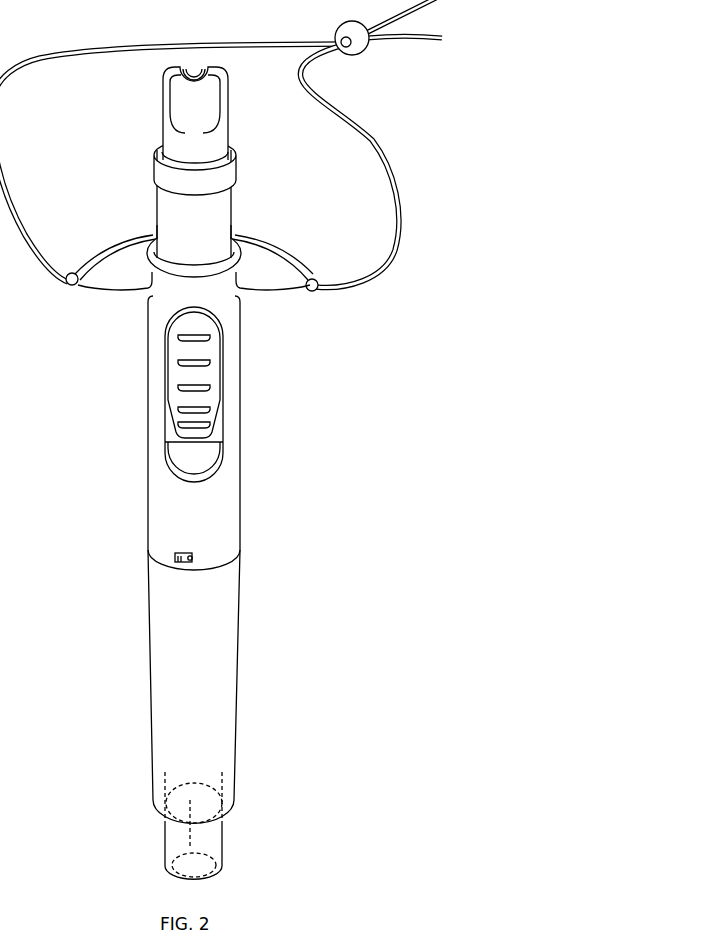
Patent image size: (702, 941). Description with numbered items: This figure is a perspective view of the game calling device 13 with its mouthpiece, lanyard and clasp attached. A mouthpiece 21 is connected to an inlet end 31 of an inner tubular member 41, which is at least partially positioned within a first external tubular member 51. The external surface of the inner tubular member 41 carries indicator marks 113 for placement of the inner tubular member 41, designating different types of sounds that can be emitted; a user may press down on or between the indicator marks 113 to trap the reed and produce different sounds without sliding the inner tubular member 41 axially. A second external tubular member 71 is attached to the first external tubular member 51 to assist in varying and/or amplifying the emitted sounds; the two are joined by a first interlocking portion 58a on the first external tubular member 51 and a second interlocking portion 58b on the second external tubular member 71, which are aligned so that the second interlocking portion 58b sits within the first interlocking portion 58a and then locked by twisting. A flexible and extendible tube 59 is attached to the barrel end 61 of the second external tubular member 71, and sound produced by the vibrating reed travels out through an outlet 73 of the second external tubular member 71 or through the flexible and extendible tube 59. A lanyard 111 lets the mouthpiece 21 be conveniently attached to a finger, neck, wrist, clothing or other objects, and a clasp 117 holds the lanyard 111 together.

The game calling device 13 is at (233, 473).
The mouthpiece 21 is at (163, 101).
The inlet end 31 is at (155, 158).
The inner tubular member 41 is at (157, 201).
The first external tubular member 51 is at (194, 397).
The first interlocking portion 58a is at (178, 563).
The second interlocking portion 58b is at (195, 558).
The flexible and extendible tube 59 is at (215, 838).
The barrel end 61 is at (233, 802).
The second external tubular member 71 is at (238, 597).
The outlet 73 is at (165, 828).
The lanyard 111 is at (183, 41).
The indicator marks 113 is at (193, 365).
The clasp 117 is at (338, 22).